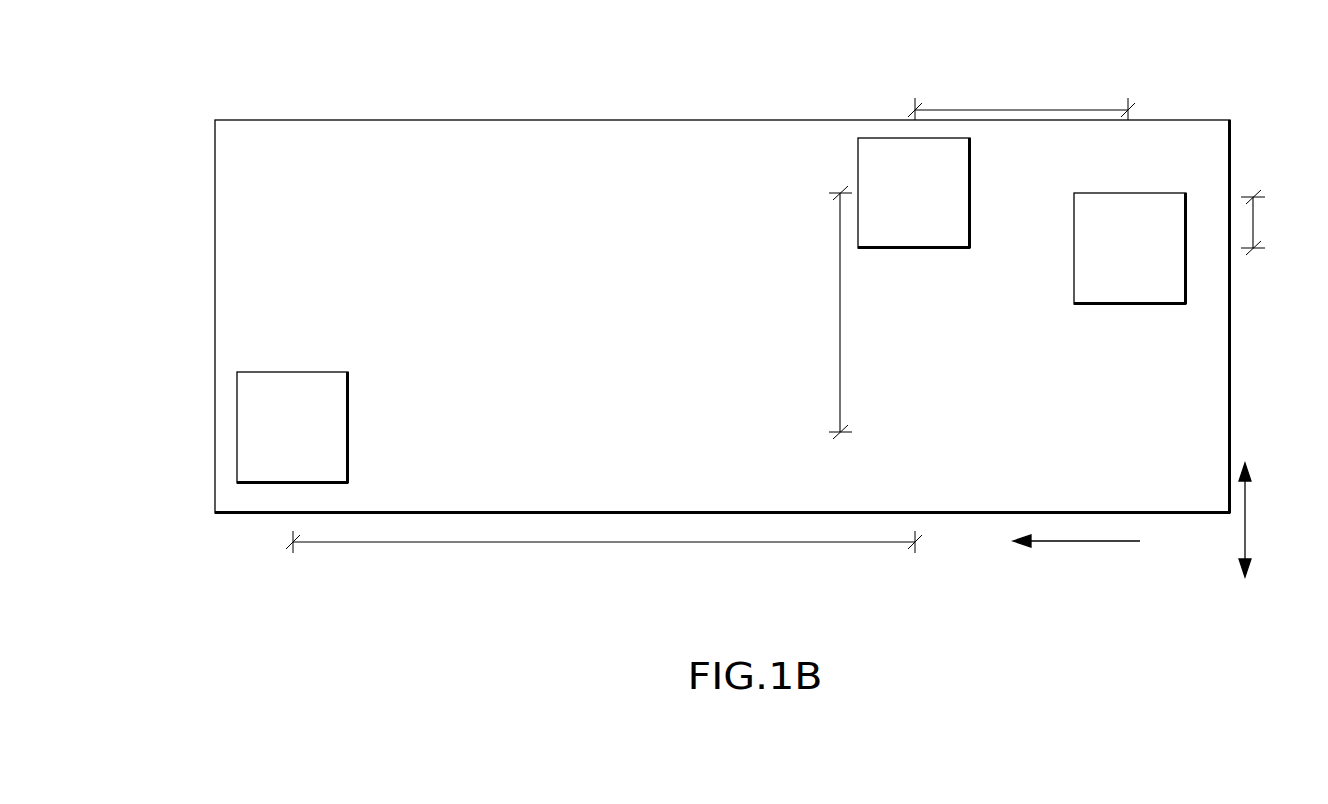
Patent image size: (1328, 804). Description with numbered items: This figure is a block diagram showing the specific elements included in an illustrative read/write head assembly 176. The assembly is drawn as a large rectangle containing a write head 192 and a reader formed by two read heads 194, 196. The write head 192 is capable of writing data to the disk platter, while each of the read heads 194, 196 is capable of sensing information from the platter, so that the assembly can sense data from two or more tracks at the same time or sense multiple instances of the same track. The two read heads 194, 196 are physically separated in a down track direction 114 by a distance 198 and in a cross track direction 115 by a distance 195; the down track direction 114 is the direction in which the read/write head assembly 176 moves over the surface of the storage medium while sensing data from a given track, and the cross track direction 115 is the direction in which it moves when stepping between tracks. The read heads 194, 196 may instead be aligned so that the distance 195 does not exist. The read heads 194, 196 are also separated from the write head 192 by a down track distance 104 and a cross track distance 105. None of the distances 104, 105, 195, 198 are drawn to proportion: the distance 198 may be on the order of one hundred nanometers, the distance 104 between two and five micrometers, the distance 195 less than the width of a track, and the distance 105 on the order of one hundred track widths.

The read/write head assembly 176 is at (1118, 486).
The write head 192 is at (276, 469).
The read head 194 is at (899, 235).
The read head 196 is at (1114, 289).
The distance 198 is at (1050, 110).
The distance 195 is at (1254, 218).
The distance 105 is at (840, 229).
The distance 104 is at (592, 544).
The down track direction 114 is at (1100, 546).
The cross track direction 115 is at (1245, 548).